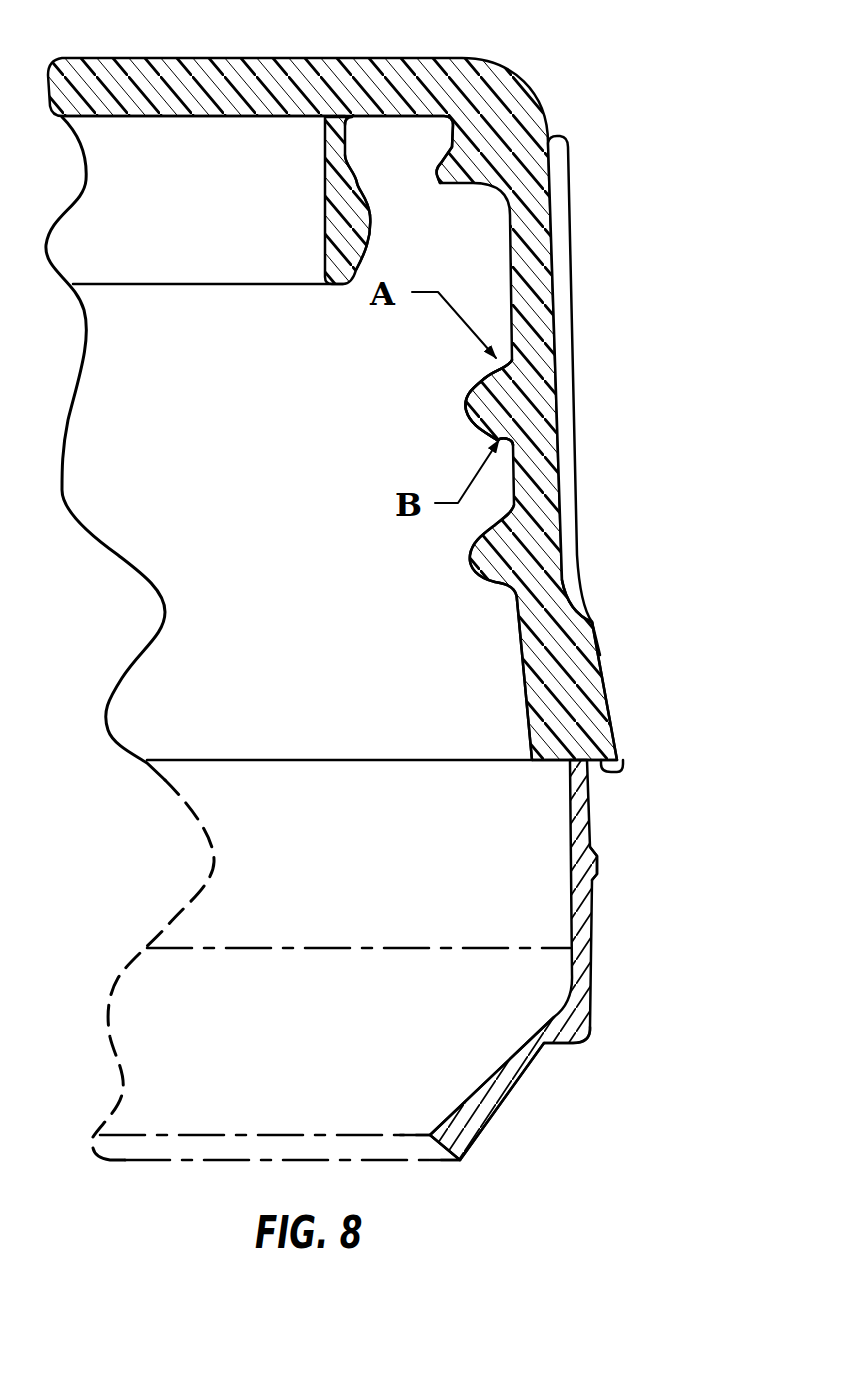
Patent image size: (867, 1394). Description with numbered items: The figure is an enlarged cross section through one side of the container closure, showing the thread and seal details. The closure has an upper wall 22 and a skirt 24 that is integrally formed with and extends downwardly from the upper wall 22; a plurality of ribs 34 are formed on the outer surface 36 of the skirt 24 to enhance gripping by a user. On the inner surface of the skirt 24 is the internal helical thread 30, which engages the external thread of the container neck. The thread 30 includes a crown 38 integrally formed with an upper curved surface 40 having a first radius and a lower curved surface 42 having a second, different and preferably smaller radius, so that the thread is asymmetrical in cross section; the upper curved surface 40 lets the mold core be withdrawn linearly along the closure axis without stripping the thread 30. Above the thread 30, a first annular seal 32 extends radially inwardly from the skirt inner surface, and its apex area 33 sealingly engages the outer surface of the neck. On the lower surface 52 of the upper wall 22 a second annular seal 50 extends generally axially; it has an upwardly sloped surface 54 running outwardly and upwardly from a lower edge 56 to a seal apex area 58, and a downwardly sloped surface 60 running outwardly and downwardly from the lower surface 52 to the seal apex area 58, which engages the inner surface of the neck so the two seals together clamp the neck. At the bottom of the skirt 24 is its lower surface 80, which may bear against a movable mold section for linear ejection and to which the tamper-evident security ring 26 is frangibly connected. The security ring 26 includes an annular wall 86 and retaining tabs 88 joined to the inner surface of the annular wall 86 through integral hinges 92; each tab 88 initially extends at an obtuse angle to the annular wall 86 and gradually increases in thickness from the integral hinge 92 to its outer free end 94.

The upper wall 22 is at (192, 80).
The skirt 24 is at (587, 713).
The tamper-evident security ring 26 is at (585, 826).
The internal helical thread 30 is at (510, 396).
The first annular seal 32 is at (367, 125).
The apex area 33 is at (441, 167).
The ribs 34 is at (573, 250).
The outer surface 36 is at (600, 640).
The crown 38 is at (465, 408).
The upper curved surface 40 is at (488, 377).
The lower curved surface 42 is at (480, 428).
The second annular seal 50 is at (323, 243).
The lower surface 52 is at (115, 119).
The upwardly sloped surface 54 is at (366, 245).
The lower edge 56 is at (137, 288).
The seal apex area 58 is at (370, 218).
The downwardly sloped surface 60 is at (353, 161).
The lower surface of the skirt 80 is at (620, 768).
The annular wall 86 is at (583, 921).
The retaining tabs 88 is at (470, 1063).
The integral hinge 92 is at (590, 1028).
The outer free end 94 is at (422, 1145).